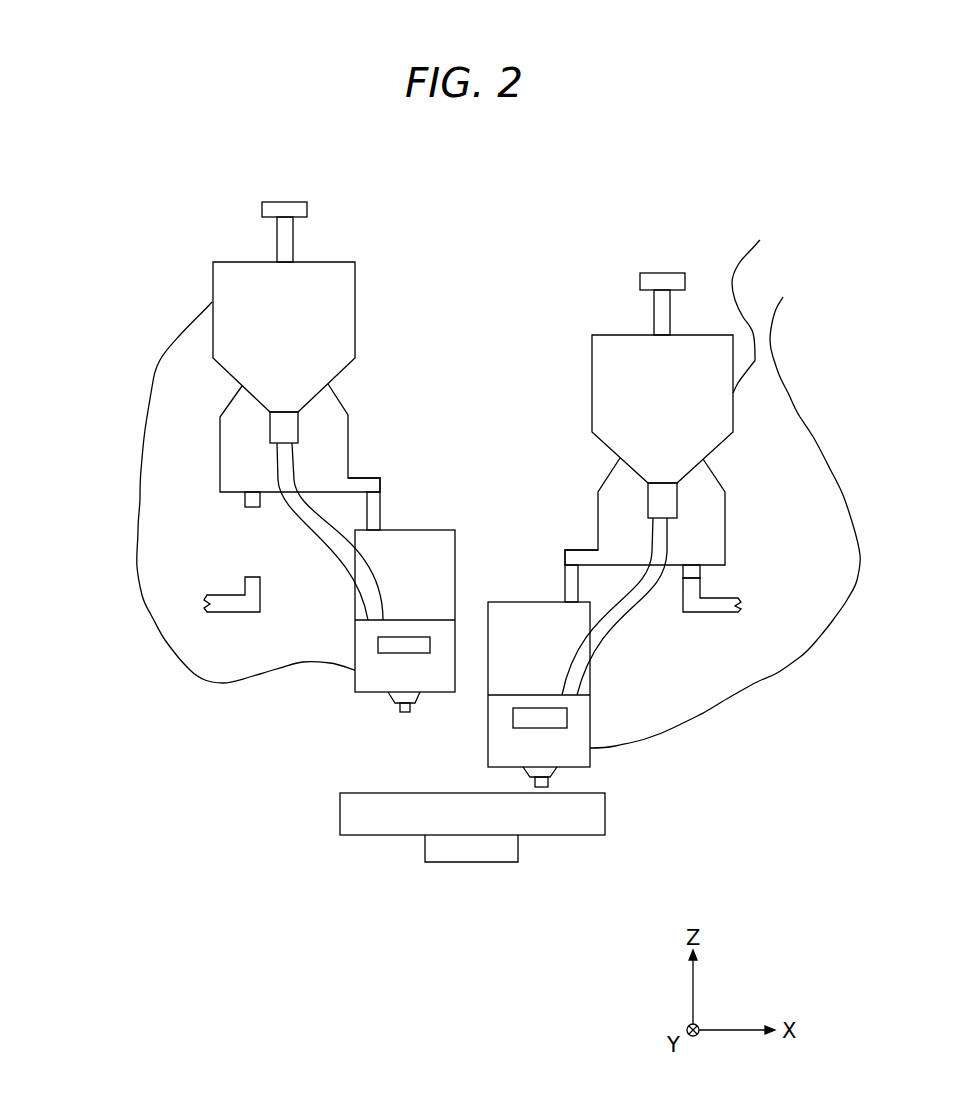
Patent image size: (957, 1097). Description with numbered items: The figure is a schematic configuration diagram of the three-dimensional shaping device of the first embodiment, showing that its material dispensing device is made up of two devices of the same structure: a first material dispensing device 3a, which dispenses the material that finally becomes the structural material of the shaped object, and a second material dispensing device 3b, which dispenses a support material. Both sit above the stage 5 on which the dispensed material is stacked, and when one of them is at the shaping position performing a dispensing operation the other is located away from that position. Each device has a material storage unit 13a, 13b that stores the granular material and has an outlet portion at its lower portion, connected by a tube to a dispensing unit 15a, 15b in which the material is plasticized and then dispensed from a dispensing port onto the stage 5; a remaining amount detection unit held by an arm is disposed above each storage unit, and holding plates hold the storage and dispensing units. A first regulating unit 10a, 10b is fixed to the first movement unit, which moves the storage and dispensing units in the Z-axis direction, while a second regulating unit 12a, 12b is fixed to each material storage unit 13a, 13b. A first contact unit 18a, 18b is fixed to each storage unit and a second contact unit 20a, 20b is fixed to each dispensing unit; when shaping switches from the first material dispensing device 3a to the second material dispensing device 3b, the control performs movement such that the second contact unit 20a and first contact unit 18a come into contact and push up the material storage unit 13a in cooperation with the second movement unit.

The first material dispensing device 3a is at (90, 493).
The second material dispensing device 3b is at (833, 217).
The stage 5 is at (340, 808).
The first regulating unit 10a is at (290, 568).
The first regulating unit 10b is at (700, 590).
The second regulating unit 12a is at (255, 506).
The second regulating unit 12b is at (700, 570).
The material storage unit 13a is at (122, 523).
The material storage unit 13b is at (796, 243).
The dispensing unit 15a is at (122, 555).
The dispensing unit 15b is at (796, 276).
The first contact unit 18a is at (378, 492).
The first contact unit 18b is at (568, 563).
The second contact unit 20a is at (380, 503).
The second contact unit 20b is at (568, 583).